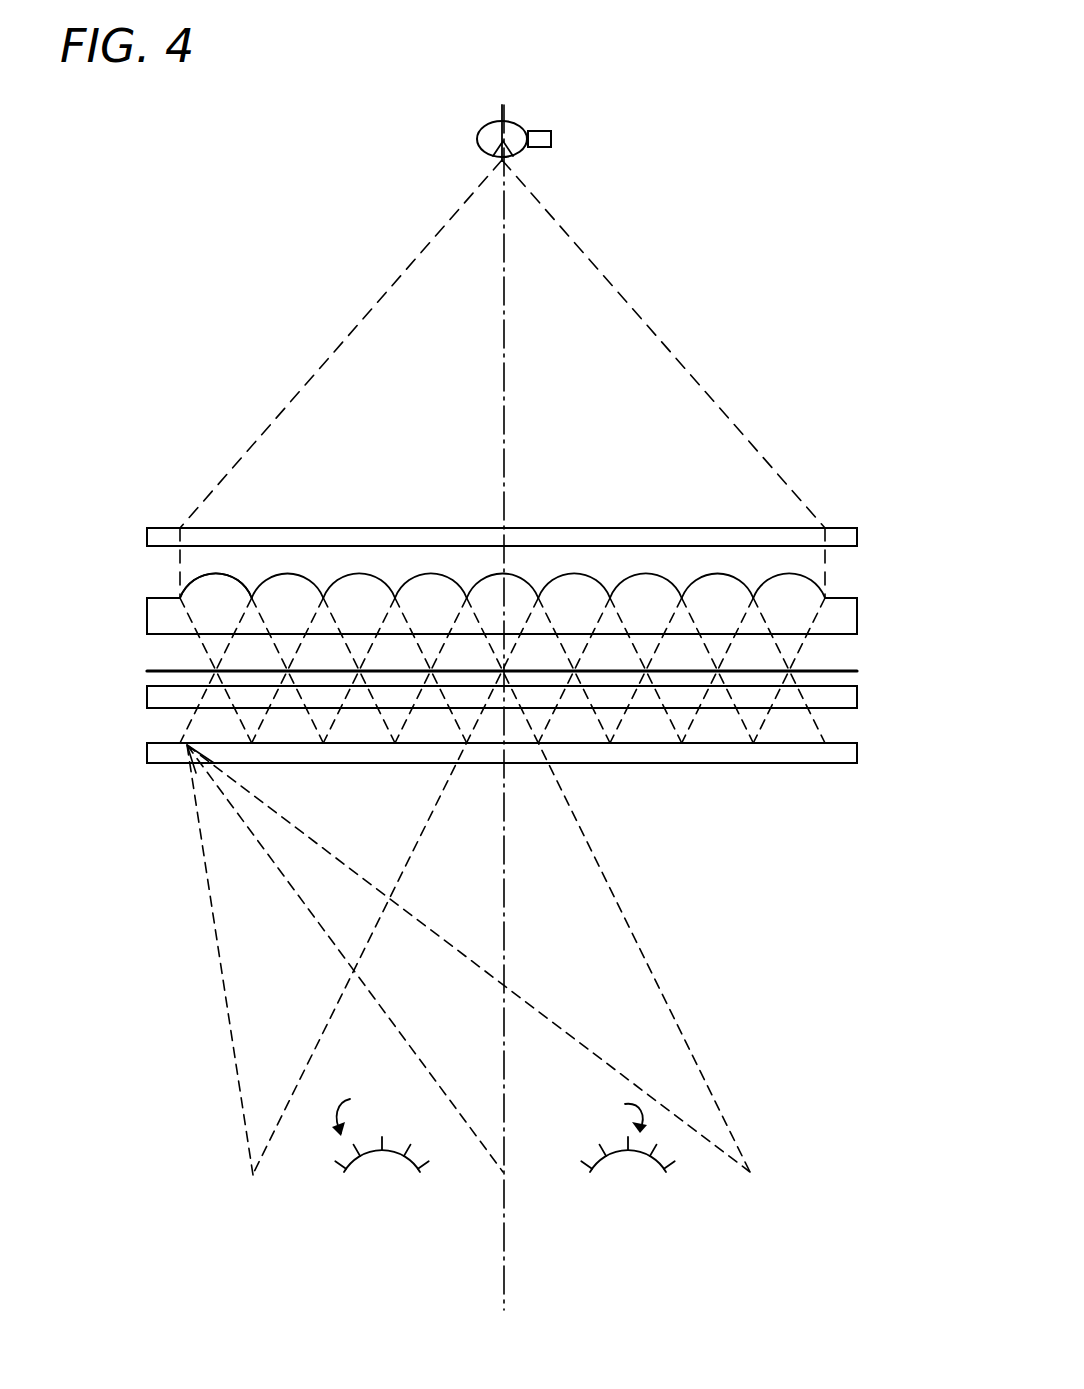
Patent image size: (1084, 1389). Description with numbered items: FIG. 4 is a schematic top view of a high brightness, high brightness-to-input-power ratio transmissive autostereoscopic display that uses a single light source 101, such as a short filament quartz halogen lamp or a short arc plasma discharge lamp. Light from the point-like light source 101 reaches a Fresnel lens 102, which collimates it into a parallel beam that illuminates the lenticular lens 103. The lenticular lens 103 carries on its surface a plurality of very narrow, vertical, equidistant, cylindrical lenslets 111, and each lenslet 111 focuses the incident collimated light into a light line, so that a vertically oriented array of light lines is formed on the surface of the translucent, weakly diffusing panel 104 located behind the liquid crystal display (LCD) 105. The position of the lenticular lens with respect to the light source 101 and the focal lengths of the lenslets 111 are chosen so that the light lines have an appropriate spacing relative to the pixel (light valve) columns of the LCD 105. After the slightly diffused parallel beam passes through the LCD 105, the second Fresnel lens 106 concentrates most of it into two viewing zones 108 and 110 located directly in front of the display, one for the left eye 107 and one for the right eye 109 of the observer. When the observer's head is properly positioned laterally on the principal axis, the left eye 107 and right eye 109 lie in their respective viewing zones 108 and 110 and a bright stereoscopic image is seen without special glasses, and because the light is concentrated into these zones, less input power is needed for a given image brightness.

The light source 101 is at (532, 156).
The Fresnel lens 102 is at (857, 537).
The lenticular lens 103 is at (840, 594).
The light-diffusing panel 104 is at (843, 671).
The liquid crystal display (LCD) 105 is at (857, 690).
The second Fresnel lens 106 is at (857, 748).
The left eye 107 is at (356, 1157).
The left eye viewing zone 108 is at (368, 1115).
The right eye 109 is at (614, 1155).
The right eye viewing zone 110 is at (612, 1113).
The cylindrical lenslets 111 is at (197, 583).